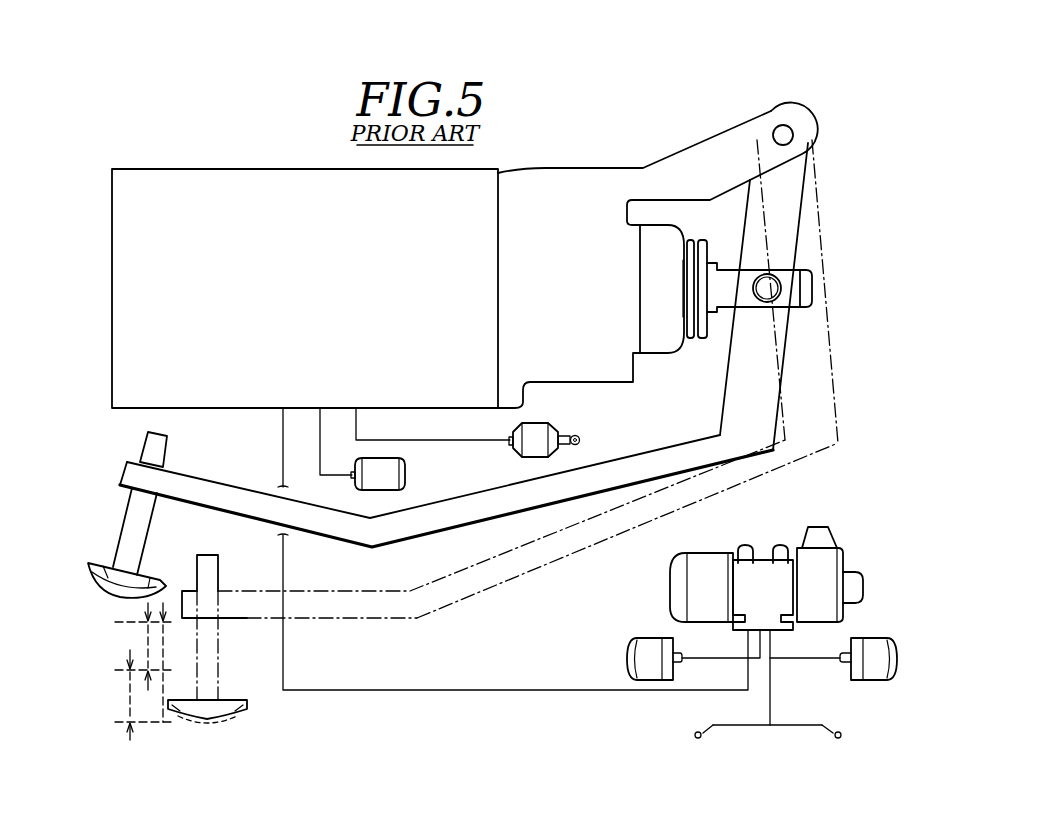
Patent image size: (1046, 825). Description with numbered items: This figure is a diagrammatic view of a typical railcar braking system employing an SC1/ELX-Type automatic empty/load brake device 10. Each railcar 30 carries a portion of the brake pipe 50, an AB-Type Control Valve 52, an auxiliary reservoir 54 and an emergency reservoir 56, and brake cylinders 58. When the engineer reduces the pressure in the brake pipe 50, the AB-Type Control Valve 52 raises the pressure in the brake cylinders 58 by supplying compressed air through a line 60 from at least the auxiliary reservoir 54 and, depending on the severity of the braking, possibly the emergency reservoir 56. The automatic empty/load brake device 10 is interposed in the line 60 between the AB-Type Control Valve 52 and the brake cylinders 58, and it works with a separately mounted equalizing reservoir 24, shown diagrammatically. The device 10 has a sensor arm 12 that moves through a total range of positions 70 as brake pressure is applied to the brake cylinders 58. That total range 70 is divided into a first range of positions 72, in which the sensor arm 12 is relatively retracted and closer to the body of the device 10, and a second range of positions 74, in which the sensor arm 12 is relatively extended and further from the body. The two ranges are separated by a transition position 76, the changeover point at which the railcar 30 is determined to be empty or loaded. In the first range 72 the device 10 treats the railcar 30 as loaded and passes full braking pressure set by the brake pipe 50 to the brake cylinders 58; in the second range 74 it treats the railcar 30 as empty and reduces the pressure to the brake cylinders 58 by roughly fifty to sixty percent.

The automatic empty/load brake device 10 is at (833, 178).
The sensor arm 12 is at (397, 540).
The equalizing reservoir 24 is at (405, 469).
The railcar 30 is at (85, 228).
The brake pipe 50 is at (797, 725).
The AB-Type Control Valve 52 is at (848, 532).
The auxiliary reservoir 54 is at (645, 638).
The emergency reservoir 56 is at (880, 680).
The brake cylinders 58 is at (560, 423).
The line 60 is at (356, 423).
The total range of positions 70 is at (163, 725).
The first range of positions 72 is at (143, 605).
The second range of positions 74 is at (130, 742).
The transition position 76 is at (122, 670).